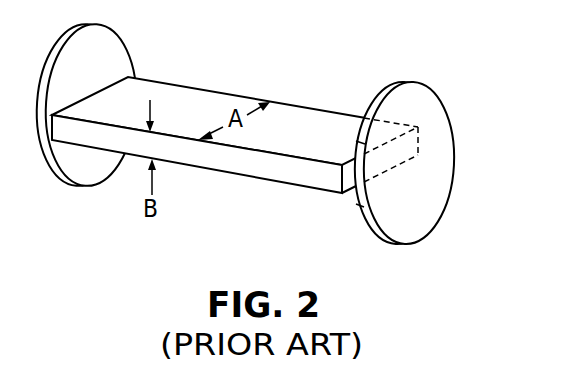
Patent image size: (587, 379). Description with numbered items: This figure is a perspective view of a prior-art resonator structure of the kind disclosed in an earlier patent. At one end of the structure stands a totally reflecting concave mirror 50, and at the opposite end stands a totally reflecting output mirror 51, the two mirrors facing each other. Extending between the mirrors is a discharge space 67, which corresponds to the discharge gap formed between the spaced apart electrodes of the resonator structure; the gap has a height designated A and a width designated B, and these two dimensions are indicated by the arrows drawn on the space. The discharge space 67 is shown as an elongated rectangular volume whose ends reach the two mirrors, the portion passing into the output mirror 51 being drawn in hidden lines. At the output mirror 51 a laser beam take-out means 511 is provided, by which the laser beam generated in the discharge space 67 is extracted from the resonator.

The totally reflecting concave mirror 50 is at (117, 44).
The totally reflecting output mirror 51 is at (440, 110).
The discharge space 67 is at (298, 118).
The laser beam take-out means 511 is at (356, 201).